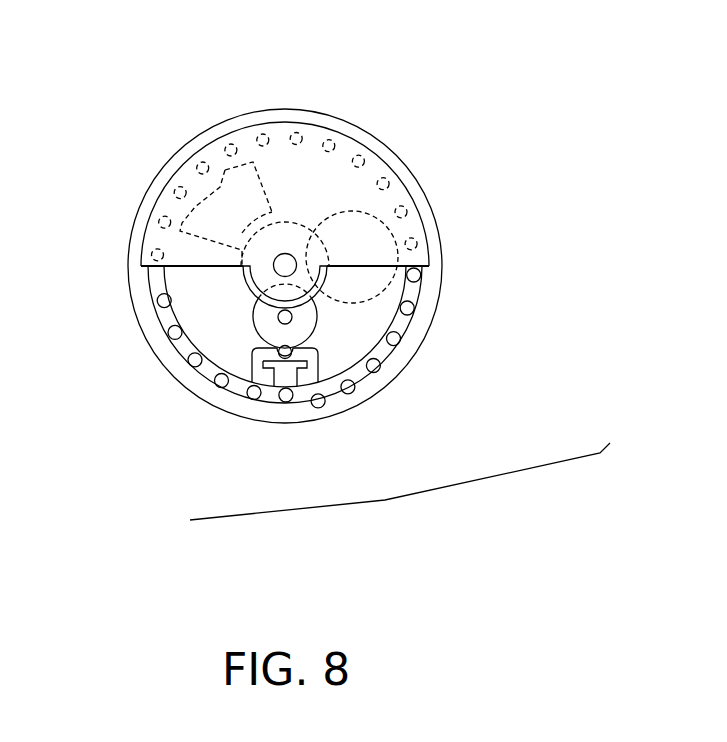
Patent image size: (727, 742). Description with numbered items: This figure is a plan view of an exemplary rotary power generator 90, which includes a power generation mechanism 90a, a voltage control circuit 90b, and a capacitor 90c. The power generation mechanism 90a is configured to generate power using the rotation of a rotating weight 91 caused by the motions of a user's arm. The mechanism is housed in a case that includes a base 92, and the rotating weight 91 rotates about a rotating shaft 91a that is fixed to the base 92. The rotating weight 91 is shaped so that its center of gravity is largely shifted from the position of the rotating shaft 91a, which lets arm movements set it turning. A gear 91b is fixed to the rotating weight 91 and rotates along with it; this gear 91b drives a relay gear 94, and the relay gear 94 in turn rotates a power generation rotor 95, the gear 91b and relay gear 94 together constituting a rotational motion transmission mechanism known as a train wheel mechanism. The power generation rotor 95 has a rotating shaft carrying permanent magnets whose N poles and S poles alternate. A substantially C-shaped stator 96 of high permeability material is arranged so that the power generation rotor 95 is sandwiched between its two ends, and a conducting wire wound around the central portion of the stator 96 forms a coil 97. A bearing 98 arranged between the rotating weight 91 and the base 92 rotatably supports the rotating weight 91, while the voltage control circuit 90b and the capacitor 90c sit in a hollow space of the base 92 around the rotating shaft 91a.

The rotary power generator 90 is at (331, 97).
The power generation mechanism 90a is at (400, 494).
The voltage control circuit 90b is at (225, 170).
The capacitor 90c is at (387, 222).
The rotating weight 91 is at (333, 178).
The rotating shaft 91a is at (281, 263).
The gear 91b is at (243, 277).
The base 92 is at (194, 396).
The relay gear 94 is at (307, 323).
The power generation rotor 95 is at (312, 352).
The stator 96 is at (313, 372).
The coil 97 is at (280, 377).
The bearing 98 is at (183, 350).